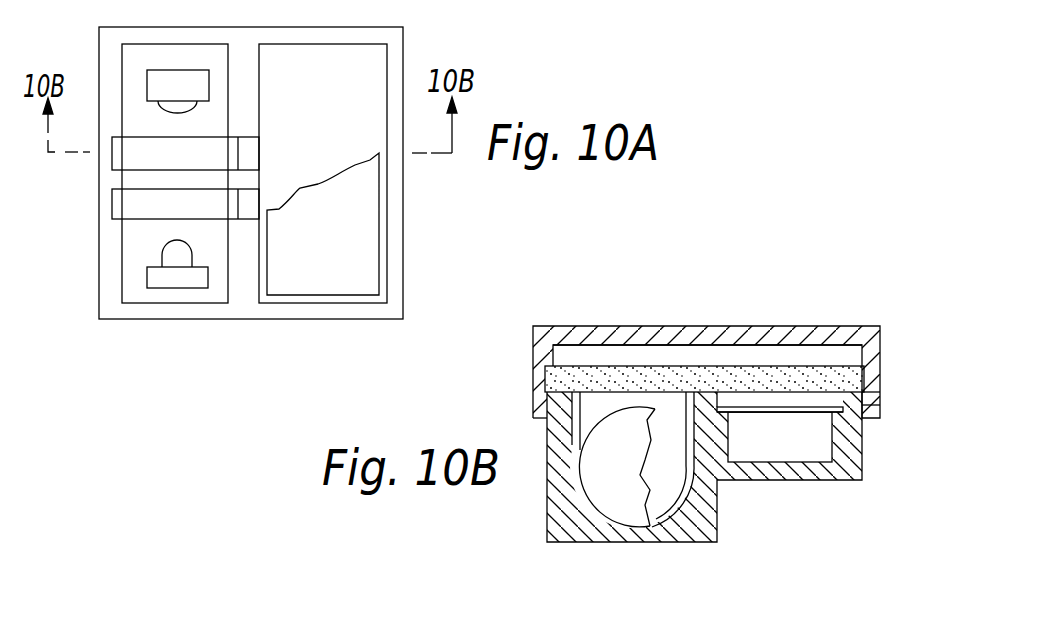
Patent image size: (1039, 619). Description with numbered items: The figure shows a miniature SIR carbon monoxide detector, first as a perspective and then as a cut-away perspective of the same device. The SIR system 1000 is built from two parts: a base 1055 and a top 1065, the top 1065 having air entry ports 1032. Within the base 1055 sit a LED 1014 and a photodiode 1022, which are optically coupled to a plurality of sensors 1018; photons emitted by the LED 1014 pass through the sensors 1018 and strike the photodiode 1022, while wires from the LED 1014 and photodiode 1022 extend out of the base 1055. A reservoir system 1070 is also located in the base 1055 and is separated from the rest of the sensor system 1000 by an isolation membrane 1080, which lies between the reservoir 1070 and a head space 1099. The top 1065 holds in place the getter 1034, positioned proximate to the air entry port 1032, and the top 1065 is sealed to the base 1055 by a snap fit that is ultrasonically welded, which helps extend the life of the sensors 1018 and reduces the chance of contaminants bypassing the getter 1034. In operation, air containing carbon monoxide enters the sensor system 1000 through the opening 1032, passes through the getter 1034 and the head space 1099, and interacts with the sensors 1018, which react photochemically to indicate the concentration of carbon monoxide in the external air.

In FIG. 10A, the SIR system 1000 is at (387, 24).
In FIG. 10A, the LED 1014 is at (181, 280).
In FIG. 10A, the sensors 1018 is at (127, 207).
In FIG. 10A, the photodiode 1022 is at (200, 77).
In FIG. 10B, the air entry port 1032 is at (882, 378).
In FIG. 10B, the getter 1034 is at (606, 370).
In FIG. 10A, the base 1055 is at (405, 215).
In FIG. 10B, the base 1055 is at (648, 542).
In FIG. 10B, the top 1065 is at (530, 354).
In FIG. 10A, the reservoir system 1070 is at (362, 268).
In FIG. 10B, the reservoir system 1070 is at (800, 435).
In FIG. 10B, the isolation membrane 1080 is at (798, 407).
In FIG. 10B, the head space 1099 is at (733, 401).